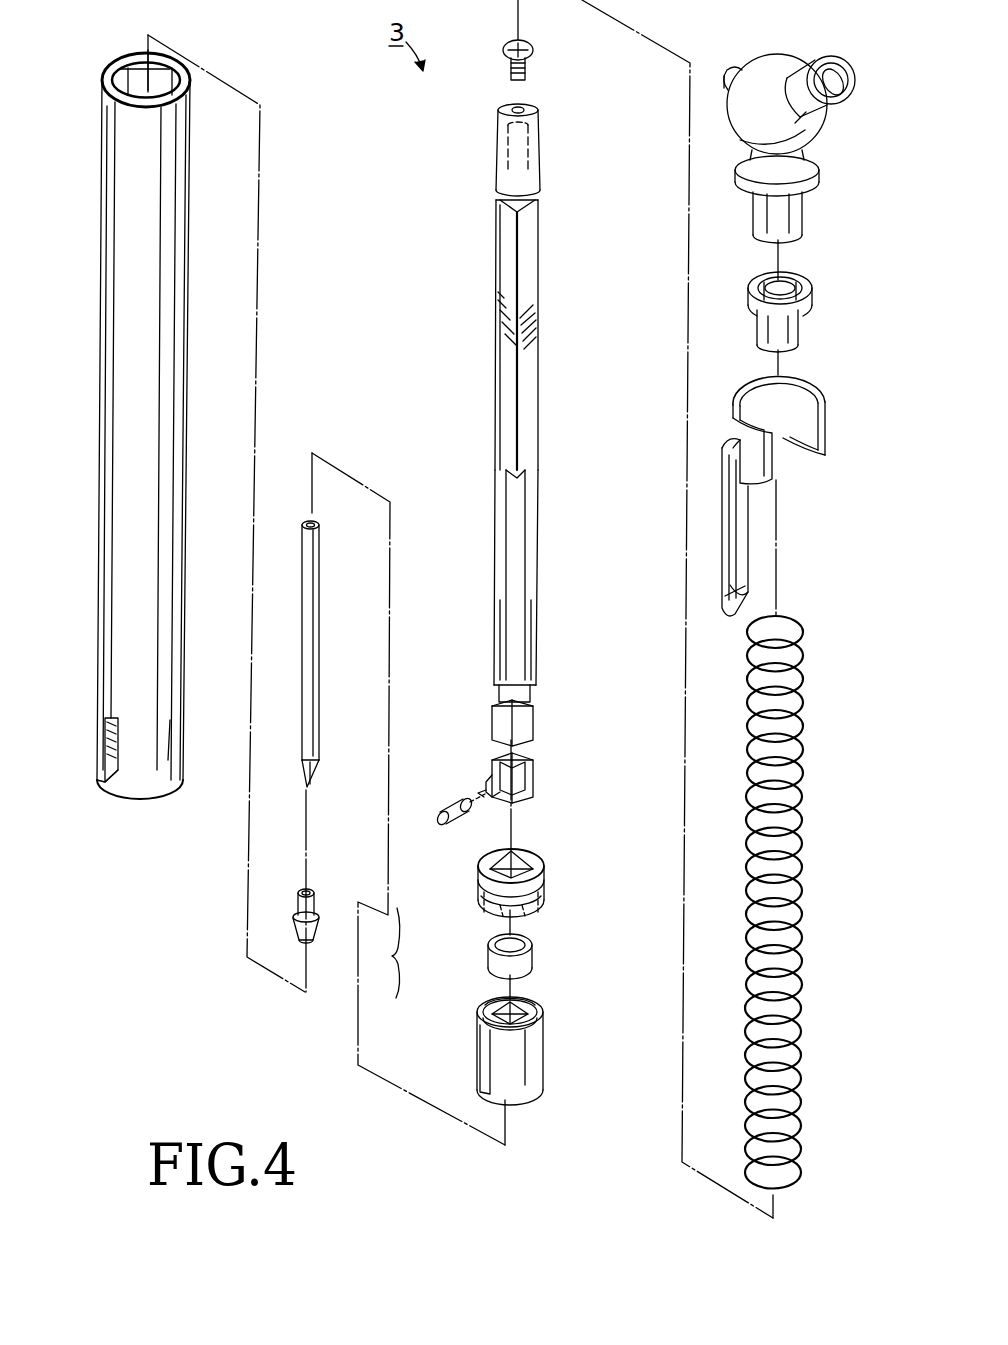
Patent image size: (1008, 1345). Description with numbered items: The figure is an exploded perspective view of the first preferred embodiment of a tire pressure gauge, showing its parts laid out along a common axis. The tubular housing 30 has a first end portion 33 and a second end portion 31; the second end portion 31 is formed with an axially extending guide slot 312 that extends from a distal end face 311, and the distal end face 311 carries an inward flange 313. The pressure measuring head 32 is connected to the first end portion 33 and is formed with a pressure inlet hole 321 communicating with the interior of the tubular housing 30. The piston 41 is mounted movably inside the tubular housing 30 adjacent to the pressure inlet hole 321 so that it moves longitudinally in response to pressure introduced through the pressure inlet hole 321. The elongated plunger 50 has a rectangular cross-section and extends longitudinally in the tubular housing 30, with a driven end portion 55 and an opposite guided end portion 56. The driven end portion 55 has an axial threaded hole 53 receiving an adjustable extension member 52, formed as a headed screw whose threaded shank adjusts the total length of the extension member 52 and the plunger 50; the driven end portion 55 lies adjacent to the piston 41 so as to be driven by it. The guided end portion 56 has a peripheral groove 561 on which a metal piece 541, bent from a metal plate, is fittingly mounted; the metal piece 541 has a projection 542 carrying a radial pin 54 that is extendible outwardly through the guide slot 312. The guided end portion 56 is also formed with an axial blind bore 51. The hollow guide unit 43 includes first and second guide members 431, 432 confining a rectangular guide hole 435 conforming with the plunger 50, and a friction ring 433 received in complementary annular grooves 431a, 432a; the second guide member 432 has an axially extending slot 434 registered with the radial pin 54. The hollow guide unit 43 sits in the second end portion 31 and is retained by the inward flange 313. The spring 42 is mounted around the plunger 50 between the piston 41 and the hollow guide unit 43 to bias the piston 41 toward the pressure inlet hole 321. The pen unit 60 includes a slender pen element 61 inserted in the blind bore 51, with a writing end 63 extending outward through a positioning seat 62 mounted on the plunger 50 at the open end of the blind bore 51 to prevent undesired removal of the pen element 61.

The tubular housing 30 is at (187, 455).
The second end portion 31 is at (168, 752).
The distal end face 311 is at (155, 798).
The guide slot 312 is at (105, 784).
The inward flange 313 is at (110, 786).
The first end portion 33 is at (148, 137).
The pressure measuring head 32 is at (771, 70).
The pressure inlet hole 321 is at (851, 102).
The piston 41 is at (800, 338).
The spring 42 is at (802, 618).
The hollow guide unit 43 is at (381, 953).
The first guide member 431 is at (478, 890).
The annular groove 431a is at (525, 915).
The second guide member 432 is at (480, 1022).
The annular groove 432a is at (530, 1003).
The friction ring 433 is at (490, 962).
The axially extending slot 434 is at (478, 1060).
The rectangular guide hole 435 is at (533, 866).
The elongated plunger 50 is at (521, 270).
The axial blind bore 51 is at (503, 515).
The adjustable extension member 52 is at (505, 68).
The axial threaded hole 53 is at (507, 108).
The radial pin 54 is at (455, 800).
The driven end portion 55 is at (500, 180).
The guided end portion 56 is at (497, 668).
The peripheral groove 561 is at (500, 690).
The metal piece 541 is at (502, 758).
The projection 542 is at (490, 790).
The pen unit 60 is at (328, 762).
The pen element 61 is at (313, 680).
The positioning seat 62 is at (318, 932).
The writing end 63 is at (304, 776).